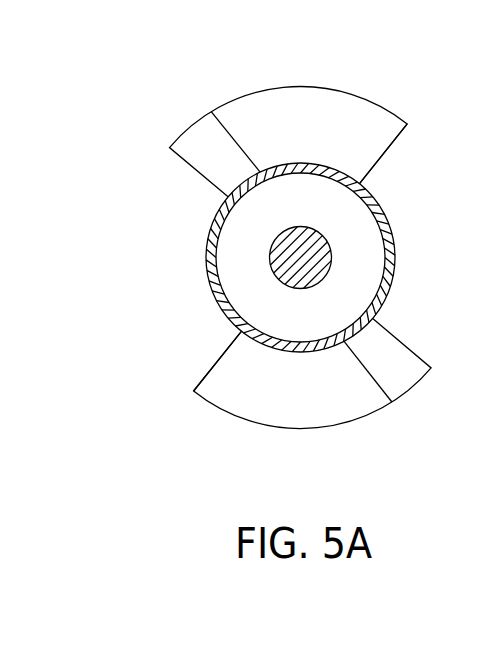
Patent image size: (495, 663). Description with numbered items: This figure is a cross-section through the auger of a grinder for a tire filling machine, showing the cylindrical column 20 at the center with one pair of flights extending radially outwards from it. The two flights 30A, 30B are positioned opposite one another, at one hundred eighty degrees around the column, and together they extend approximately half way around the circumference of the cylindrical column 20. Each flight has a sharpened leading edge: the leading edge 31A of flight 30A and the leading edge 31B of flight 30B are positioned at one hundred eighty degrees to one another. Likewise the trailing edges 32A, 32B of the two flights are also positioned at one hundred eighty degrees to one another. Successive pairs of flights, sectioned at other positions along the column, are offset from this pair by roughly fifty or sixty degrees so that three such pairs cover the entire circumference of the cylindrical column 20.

The cylindrical column 20 is at (250, 293).
The flight 30A is at (302, 403).
The flight 30B is at (342, 117).
The sharpened leading edge 31A is at (387, 375).
The sharpened leading edge 31B is at (213, 163).
The trailing edge 32A is at (203, 378).
The trailing edge 32B is at (367, 167).